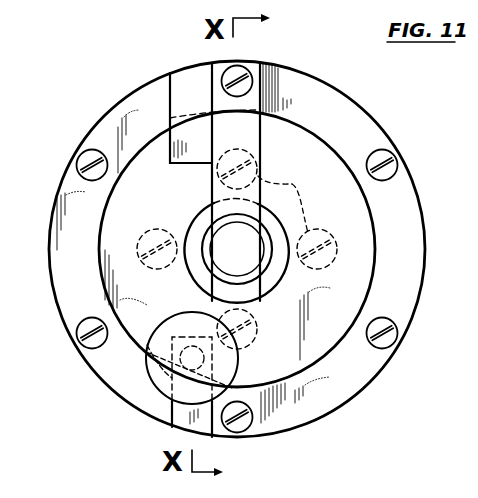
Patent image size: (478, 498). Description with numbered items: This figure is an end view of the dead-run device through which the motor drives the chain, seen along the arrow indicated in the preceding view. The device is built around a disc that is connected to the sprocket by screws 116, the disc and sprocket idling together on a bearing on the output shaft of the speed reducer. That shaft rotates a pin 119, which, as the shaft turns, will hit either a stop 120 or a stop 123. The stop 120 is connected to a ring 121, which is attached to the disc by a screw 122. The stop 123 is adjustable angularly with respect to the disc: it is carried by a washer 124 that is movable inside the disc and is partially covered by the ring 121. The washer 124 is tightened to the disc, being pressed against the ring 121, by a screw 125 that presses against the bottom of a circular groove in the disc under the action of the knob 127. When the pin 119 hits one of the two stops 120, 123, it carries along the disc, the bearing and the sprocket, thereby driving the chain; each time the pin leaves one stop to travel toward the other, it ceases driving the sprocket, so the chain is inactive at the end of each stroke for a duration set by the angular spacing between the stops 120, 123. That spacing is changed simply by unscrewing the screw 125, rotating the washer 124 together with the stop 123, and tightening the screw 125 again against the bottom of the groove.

The screws 116 is at (291, 200).
The pin 119 is at (255, 130).
The stop 120 is at (176, 78).
The ring 121 is at (333, 395).
The screw 122 is at (384, 153).
The stop 123 is at (183, 420).
The washer 124 is at (374, 232).
The screw 125 is at (150, 374).
The knob 127 is at (237, 355).